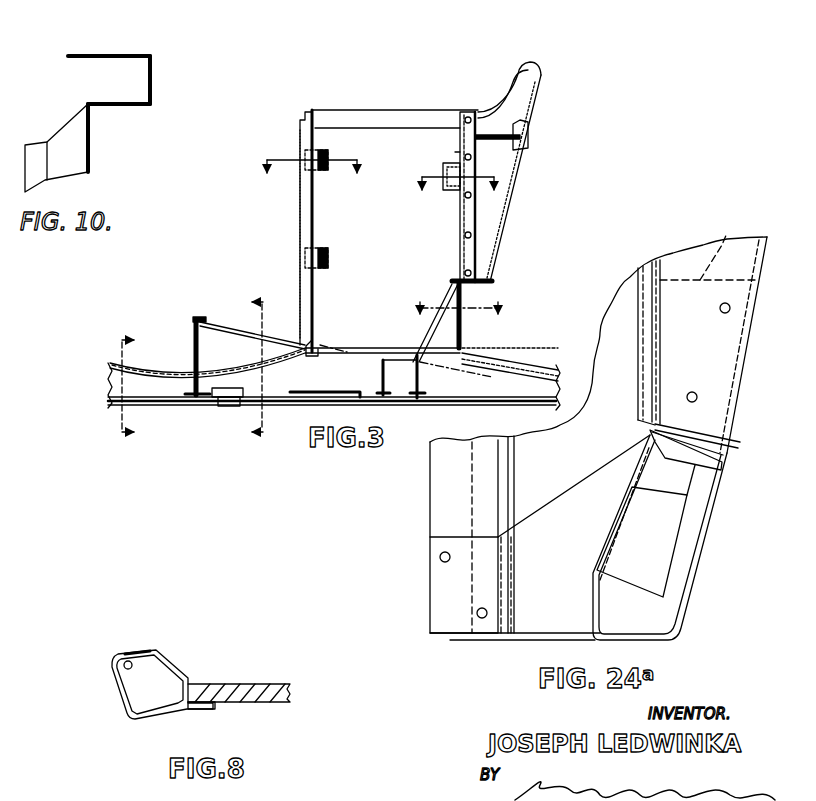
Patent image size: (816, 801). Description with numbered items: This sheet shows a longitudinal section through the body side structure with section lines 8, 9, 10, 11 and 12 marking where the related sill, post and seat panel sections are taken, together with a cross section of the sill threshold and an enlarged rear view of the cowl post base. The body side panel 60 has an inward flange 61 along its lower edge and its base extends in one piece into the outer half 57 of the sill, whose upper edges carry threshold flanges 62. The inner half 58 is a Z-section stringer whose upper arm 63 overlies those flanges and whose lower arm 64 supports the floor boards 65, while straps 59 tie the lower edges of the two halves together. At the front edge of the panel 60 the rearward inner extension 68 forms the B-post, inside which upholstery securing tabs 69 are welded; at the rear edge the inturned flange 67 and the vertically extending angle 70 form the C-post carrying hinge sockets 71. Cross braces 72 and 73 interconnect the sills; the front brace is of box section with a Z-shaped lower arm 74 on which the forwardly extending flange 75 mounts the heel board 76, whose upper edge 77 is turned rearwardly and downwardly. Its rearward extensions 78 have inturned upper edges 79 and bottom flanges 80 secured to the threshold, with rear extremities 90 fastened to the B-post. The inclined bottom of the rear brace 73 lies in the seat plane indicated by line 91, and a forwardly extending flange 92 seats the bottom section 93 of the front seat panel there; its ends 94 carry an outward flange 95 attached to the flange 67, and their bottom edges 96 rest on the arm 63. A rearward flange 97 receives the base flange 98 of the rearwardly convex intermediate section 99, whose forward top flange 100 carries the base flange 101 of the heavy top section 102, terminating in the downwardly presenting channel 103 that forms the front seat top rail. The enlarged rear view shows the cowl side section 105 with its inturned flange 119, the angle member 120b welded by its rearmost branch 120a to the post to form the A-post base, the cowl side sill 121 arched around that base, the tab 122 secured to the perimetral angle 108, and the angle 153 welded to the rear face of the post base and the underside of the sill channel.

In FIG. 10, the body side panel 60 is at (96, 55).
In FIG. 3, the body side panel 60 is at (377, 143).
In FIG. 10, the inwardly extending flange on rear edge of panel 67 is at (146, 77).
In FIG. 3, the inwardly extending flange on rear edge of panel 67 is at (562, 304).
In FIG. 10, the outwardly extended flange 95 is at (153, 81).
In FIG. 3, the outwardly extended flange 95 is at (472, 347).
In FIG. 10, the ends of bottom section 94 is at (118, 107).
In FIG. 3, the ends of bottom section 94 is at (470, 322).
In FIG. 10, the bottom section of front seat panel 93 is at (82, 153).
In FIG. 3, the bottom section of front seat panel 93 is at (478, 334).
In FIG. 3, the section line 8— 8 is at (123, 389).
In FIG. 3, the section line 9— 9 is at (258, 371).
In FIG. 3, the section line 10— 10 is at (461, 309).
In FIG. 3, the section line 11— 11 is at (319, 185).
In FIG. 3, the section line 12— 12 is at (463, 200).
In FIG. 3, the rearward inner extension 68 is at (302, 205).
In FIG. 3, the upholstery securing tabs 69 is at (323, 156).
In FIG. 3, the vertically extending angle 70 is at (462, 255).
In FIG. 3, the hinge sockets 71 is at (455, 195).
In FIG. 3, the cross connecting brace 72 is at (229, 410).
In FIG. 3, the rear cross brace 73 is at (418, 385).
In FIG. 3, the lower arm of the Z 74 is at (198, 397).
In FIG. 3, the forwardly extending flange 75 is at (190, 393).
In FIG. 3, the transverse front seat heel board 76 is at (193, 325).
In FIG. 3, the upper edge of heel board 77 is at (203, 320).
In FIG. 3, the rearward extensions 78 is at (225, 348).
In FIG. 3, the upper edges of rearward extensions 79 is at (292, 342).
In FIG. 3, the inwardly flanged bottom edge 80 is at (297, 352).
In FIG. 3, the rear extremities of extension 90 is at (313, 345).
In FIG. 3, the line designating inclined plane of the seat 91 is at (375, 352).
In FIG. 3, the forwardly extending flange 92 is at (412, 357).
In FIG. 3, the bottom edges of ends 96 is at (443, 352).
In FIG. 3, the rearwardly extending flange 97 is at (480, 283).
In FIG. 3, the base flange of intermediate section 98 is at (500, 290).
In FIG. 3, the intermediate front seat panel section 99 is at (510, 188).
In FIG. 3, the forwardly extending flange 100 is at (520, 150).
In FIG. 3, the base flange of top section 101 is at (530, 122).
In FIG. 3, the top section of rear seat panel 102 is at (535, 97).
In FIG. 3, the downwardly presenting channel 103 is at (528, 75).
In FIG. 3, the upper arm of Z section 63 is at (370, 347).
In FIG. 8, the upper arm of Z section 63 is at (145, 655).
In FIG. 24A, the inturned flange 119 is at (713, 370).
In FIG. 24A, the rearmost branch 120a is at (715, 250).
In FIG. 24A, the downwardly extending angle member 120b is at (672, 350).
In FIG. 24A, the perimetrally extending angle 108 is at (447, 497).
In FIG. 24A, the inwardly extending tab 122 is at (447, 592).
In FIG. 24A, the cowl side sill 121 is at (617, 533).
In FIG. 24A, the side section of cowl panel 105 is at (713, 563).
In FIG. 24A, the angle 153 is at (727, 462).
In FIG. 8, the outer half of channel section 57 is at (112, 688).
In FIG. 8, the inner half of sill 58 is at (172, 665).
In FIG. 8, the straps 59 is at (168, 713).
In FIG. 8, the inwardly extending flange 61 is at (140, 718).
In FIG. 8, the inwardly-extending flanges 62 is at (127, 658).
In FIG. 8, the lower arm of Z section 64 is at (215, 710).
In FIG. 8, the floor boards 65 is at (262, 685).